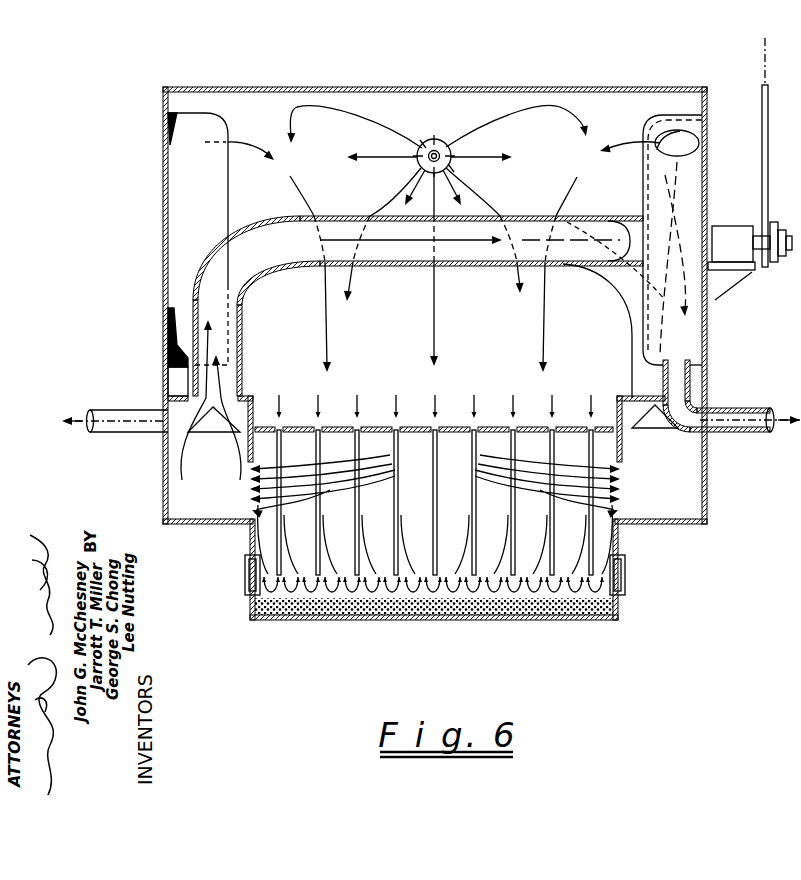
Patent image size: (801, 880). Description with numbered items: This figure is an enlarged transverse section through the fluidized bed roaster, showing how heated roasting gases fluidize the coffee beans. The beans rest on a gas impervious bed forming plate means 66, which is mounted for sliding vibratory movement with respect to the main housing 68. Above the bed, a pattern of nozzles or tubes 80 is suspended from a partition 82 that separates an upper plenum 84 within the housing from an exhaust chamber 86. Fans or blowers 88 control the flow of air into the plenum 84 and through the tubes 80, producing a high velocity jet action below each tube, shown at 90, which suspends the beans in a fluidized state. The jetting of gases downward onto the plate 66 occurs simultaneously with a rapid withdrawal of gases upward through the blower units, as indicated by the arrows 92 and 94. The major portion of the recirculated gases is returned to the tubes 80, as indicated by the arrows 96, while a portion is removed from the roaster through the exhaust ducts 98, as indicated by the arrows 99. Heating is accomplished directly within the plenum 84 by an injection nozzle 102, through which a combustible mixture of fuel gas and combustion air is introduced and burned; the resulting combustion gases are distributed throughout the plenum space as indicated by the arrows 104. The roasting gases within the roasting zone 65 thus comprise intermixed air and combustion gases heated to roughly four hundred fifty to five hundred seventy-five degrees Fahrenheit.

The roasting zone 65 is at (487, 588).
The bed forming plate means 66 is at (500, 620).
The main housing 68 is at (707, 510).
The nozzles or tubes 80 is at (383, 445).
The partition 82 is at (461, 427).
The upper plenum 84 is at (497, 355).
The exhaust chamber 86 is at (565, 533).
The fans or blowers 88 is at (190, 212).
The high velocity jet action 90 is at (372, 603).
The arrows indicating gas withdrawal 92 is at (262, 528).
The arrows indicating gas withdrawal 94 is at (197, 477).
The arrows indicating recirculated gases 96 is at (325, 332).
The exhaust ducts 98 is at (120, 410).
The arrows indicating exhaust flow 99 is at (78, 435).
The injection nozzle 102 is at (436, 139).
The arrows indicating combustion gas distribution 104 is at (298, 106).